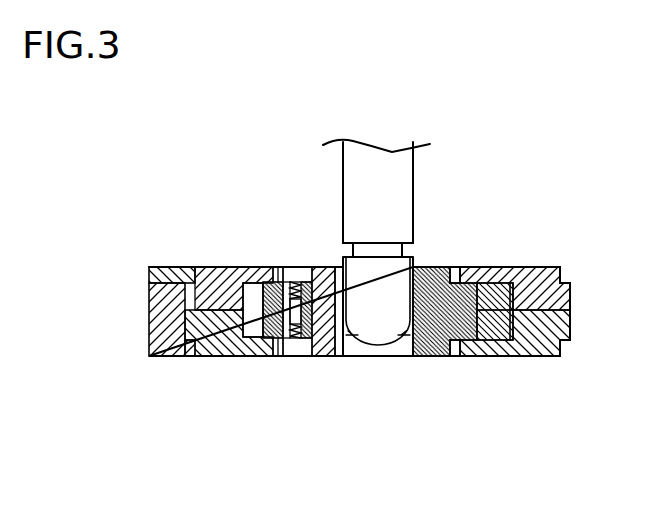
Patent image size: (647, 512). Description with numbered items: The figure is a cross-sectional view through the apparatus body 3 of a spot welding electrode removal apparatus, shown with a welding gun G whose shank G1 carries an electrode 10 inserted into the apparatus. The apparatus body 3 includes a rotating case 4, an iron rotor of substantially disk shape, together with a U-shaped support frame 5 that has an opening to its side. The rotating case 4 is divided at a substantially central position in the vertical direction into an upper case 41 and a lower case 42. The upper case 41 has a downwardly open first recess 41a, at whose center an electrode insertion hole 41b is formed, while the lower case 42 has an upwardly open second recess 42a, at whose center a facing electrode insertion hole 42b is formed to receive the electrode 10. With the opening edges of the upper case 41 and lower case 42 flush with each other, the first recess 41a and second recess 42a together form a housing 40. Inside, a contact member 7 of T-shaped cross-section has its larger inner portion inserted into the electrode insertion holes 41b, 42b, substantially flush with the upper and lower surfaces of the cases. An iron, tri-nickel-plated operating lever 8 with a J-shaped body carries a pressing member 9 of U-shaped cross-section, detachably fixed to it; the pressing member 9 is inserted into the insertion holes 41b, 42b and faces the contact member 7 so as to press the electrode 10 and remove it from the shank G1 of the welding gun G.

The apparatus body 3 is at (528, 248).
The rotating case 4 is at (632, 462).
The support frame 5 is at (149, 312).
The contact member 7 is at (420, 345).
The operating lever 8 is at (270, 345).
The pressing member 9 is at (320, 345).
The electrode 10 is at (375, 345).
The housing 40 is at (337, 345).
The upper case 41 is at (550, 356).
The first recess 41a is at (485, 289).
The electrode insertion hole 41b is at (448, 271).
The lower case 42 is at (518, 356).
The second recess 42a is at (470, 345).
The electrode insertion hole 42b is at (432, 345).
The welding gun G is at (330, 190).
The shank G1 is at (343, 222).